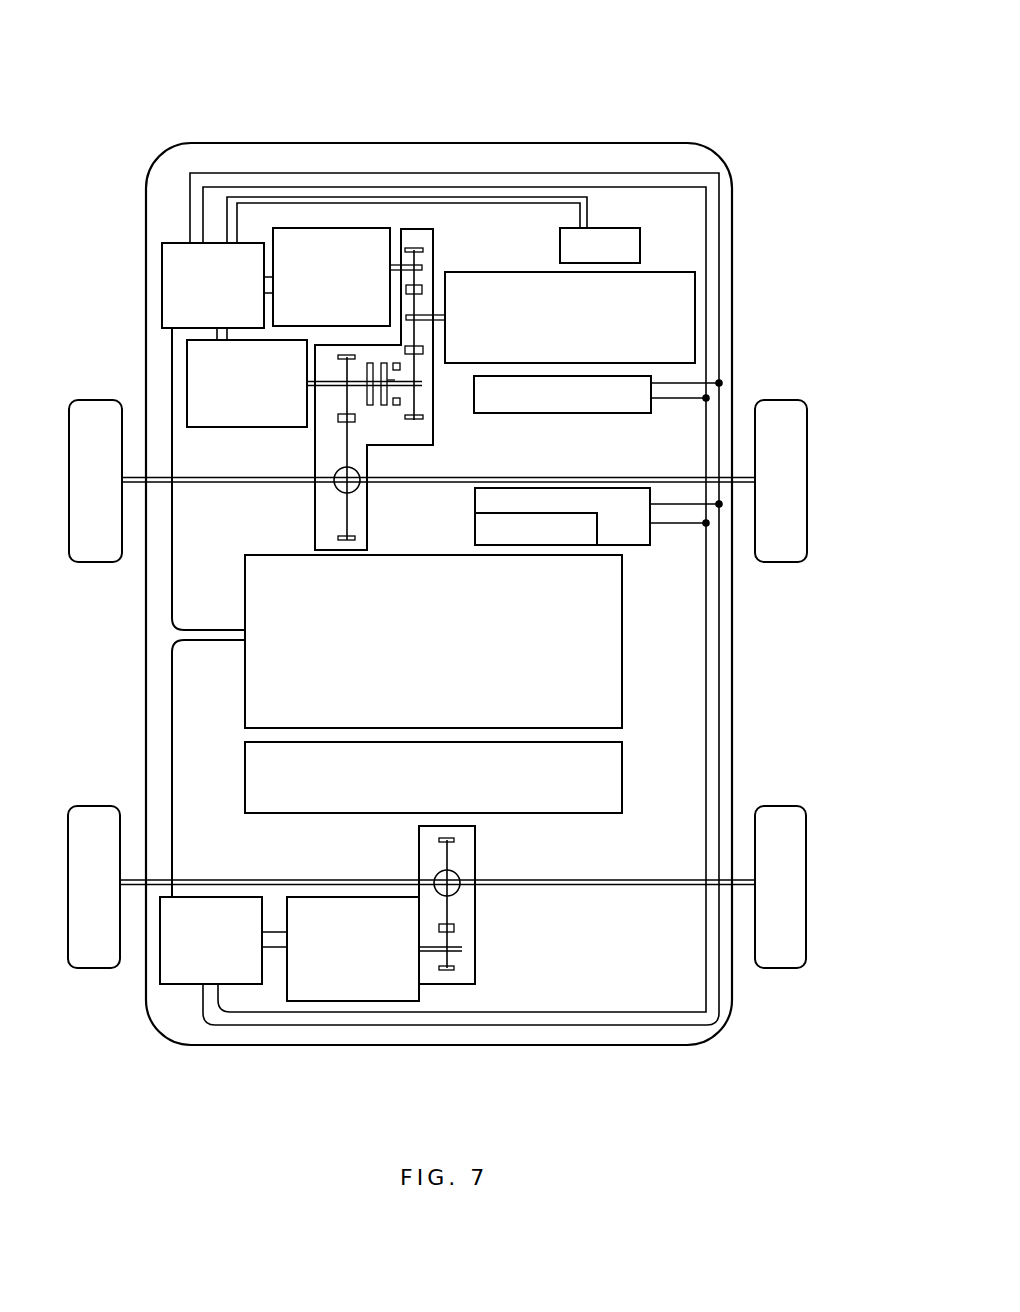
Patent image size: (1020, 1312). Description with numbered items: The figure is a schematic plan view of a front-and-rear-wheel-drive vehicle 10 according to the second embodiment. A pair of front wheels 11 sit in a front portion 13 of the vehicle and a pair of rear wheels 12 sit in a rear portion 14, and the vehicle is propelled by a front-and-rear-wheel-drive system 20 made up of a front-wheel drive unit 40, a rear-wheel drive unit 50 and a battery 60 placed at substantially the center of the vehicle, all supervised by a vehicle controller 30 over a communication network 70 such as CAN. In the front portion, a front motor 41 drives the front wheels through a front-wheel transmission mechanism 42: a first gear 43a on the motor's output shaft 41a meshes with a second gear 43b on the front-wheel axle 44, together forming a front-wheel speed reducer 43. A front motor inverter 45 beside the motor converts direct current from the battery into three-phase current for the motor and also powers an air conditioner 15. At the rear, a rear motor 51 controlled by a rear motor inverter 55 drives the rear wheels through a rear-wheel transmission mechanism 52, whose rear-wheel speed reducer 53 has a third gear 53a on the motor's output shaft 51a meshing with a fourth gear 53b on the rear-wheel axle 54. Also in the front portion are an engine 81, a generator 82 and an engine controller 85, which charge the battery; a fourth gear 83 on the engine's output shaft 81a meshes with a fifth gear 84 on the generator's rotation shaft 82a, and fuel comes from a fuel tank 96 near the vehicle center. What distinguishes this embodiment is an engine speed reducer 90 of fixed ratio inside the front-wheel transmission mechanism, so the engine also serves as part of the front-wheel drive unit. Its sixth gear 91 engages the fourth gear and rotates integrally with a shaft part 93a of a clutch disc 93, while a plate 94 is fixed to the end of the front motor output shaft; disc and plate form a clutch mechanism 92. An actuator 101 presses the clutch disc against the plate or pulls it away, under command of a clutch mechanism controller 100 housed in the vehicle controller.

The vehicle 10 is at (467, 537).
The front wheels 11 is at (90, 565).
The rear wheels 12 is at (96, 968).
The front portion 13 is at (190, 335).
The rear portion 14 is at (365, 958).
The air conditioner 15 is at (560, 250).
The front-and-rear-wheel-drive system 20 is at (202, 603).
The vehicle controller 30 is at (549, 542).
The front-wheel drive unit 40 is at (357, 326).
The front motor 41 is at (200, 355).
The output shaft 41a is at (333, 383).
The front-wheel transmission mechanism 42 is at (306, 461).
The front-wheel speed reducer 43 is at (332, 450).
The first gear 43a is at (345, 372).
The second gear 43b is at (337, 509).
The front-wheel axle 44 is at (450, 483).
The front motor inverter 45 is at (170, 272).
The rear-wheel drive unit 50 is at (289, 994).
The rear motor 51 is at (350, 975).
The output shaft 51a is at (435, 985).
The rear-wheel transmission mechanism 52 is at (500, 905).
The rear-wheel speed reducer 53 is at (488, 964).
The third gear 53a is at (447, 975).
The fourth gear 53b is at (453, 860).
The rear-wheel axle 54 is at (653, 888).
The rear motor inverter 55 is at (180, 975).
The battery 60 is at (608, 680).
The communication network 70 is at (722, 668).
The engine 81 is at (663, 284).
The output shaft 81a is at (437, 316).
The generator 82 is at (305, 240).
The rotation shaft 82a is at (405, 262).
The fourth gear 83 is at (424, 348).
The fifth gear 84 is at (408, 250).
The engine controller 85 is at (607, 407).
The engine speed reducer 90 is at (418, 286).
The sixth gear 91 is at (420, 420).
The clutch mechanism 92 is at (361, 375).
The clutch disc 93 is at (386, 363).
The shaft part 93a is at (418, 398).
The plate 94 is at (372, 364).
The fuel tank 96 is at (608, 780).
The clutch mechanism controller 100 is at (485, 535).
The actuator 101 is at (402, 367).